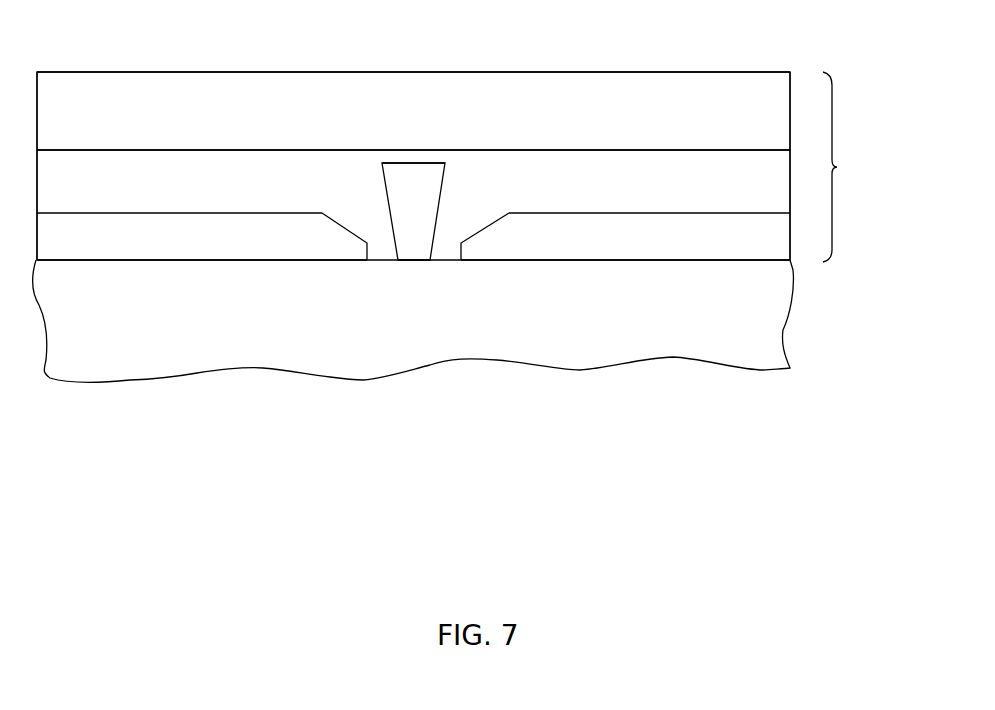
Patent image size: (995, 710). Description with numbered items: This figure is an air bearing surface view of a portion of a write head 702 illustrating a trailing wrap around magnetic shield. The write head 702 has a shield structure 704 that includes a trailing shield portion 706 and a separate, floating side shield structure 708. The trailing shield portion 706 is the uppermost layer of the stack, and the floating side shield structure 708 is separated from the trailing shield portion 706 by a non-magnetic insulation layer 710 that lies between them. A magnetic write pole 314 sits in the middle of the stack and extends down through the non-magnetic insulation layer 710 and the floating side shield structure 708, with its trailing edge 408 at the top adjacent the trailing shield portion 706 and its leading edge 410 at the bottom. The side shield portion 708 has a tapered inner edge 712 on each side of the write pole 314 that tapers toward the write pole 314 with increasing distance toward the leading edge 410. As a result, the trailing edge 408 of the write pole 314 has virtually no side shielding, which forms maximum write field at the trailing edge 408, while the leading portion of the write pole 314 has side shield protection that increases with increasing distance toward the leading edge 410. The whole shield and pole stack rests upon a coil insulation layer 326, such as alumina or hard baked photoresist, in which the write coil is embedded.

The write head 702 is at (434, 68).
The shield structure 704 is at (833, 93).
The trailing shield portion 706 is at (156, 111).
The non-magnetic insulation layer 710 is at (143, 182).
The floating side shield structure 708 is at (143, 238).
The tapered inner edge 712 is at (349, 231).
The magnetic write pole 314 is at (438, 178).
The trailing edge 408 is at (413, 163).
The leading edge 410 is at (413, 260).
The coil insulation layer 326 is at (407, 323).